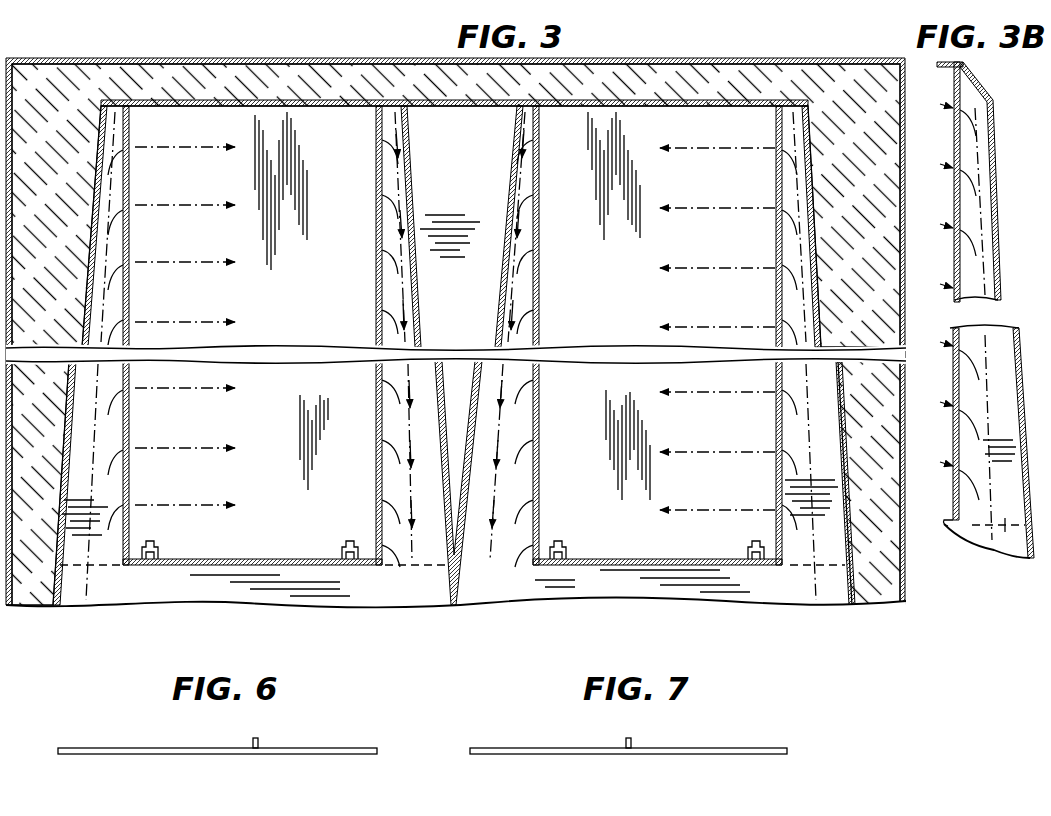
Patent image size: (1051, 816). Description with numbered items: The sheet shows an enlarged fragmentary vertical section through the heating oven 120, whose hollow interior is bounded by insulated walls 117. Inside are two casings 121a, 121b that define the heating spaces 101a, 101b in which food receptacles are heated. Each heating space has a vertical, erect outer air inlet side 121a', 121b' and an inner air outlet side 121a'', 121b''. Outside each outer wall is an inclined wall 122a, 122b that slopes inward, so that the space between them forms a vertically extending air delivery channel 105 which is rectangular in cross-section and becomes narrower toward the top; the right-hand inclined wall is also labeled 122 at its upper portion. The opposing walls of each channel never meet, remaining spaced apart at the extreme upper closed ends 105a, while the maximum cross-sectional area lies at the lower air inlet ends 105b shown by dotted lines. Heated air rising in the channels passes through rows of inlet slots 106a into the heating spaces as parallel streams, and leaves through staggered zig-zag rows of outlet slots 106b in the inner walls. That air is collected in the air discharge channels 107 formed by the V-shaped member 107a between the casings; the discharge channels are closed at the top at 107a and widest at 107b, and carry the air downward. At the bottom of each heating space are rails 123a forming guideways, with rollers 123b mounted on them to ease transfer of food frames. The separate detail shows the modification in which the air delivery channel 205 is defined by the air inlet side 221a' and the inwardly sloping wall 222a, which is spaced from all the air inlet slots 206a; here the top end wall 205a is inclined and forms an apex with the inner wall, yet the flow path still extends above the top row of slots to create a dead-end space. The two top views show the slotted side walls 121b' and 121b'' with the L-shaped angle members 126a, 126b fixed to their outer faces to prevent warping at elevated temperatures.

In FIG. 3, the oven 120 is at (68, 56).
In FIG. 3, the insulated walls 117 is at (186, 82).
In FIG. 3, the inclined wall 122b is at (107, 127).
In FIG. 3, the right outer sloped wall 122 is at (803, 186).
In FIG. 3, the inclined wall 122a is at (848, 602).
In FIG. 3, the outer air inlet side 121b' is at (162, 335).
In FIG. 6, the outer air inlet side 121b' is at (217, 740).
In FIG. 3, the outer air inlet side 121a' is at (749, 335).
In FIG. 3, the inner air outlet side 121b'' is at (340, 335).
In FIG. 7, the inner air outlet side 121b'' is at (628, 740).
In FIG. 3, the inner air outlet side 121a'' is at (575, 335).
In FIG. 3, the casing 121b is at (252, 522).
In FIG. 3, the casing 121a is at (657, 538).
In FIG. 3, the air discharge channels 107 is at (506, 302).
In FIG. 3, the V-shaped member 107a is at (514, 142).
In FIG. 3, the slots 106b is at (374, 146).
In FIG. 3, the slots 106a is at (130, 264).
In FIG. 3, the extreme upper closed ends 105a is at (782, 128).
In FIG. 3, the air delivery channels 105 is at (129, 421).
In FIG. 3, the lower air inlet ends 105b is at (801, 570).
In FIG. 3, the widest portions 107b is at (100, 568).
In FIG. 3, the heating space 101b is at (312, 310).
In FIG. 3, the heating space 101a is at (647, 310).
In FIG. 3, the rollers 123b is at (158, 548).
In FIG. 3, the rails 123a is at (170, 556).
In FIG. 3B, the top end walls 205a is at (969, 80).
In FIG. 3B, the air inlet side 221a' is at (944, 294).
In FIG. 3B, the inwardly sloping wall 222a is at (989, 150).
In FIG. 3B, the air delivery channels 205 is at (1000, 560).
In FIG. 3B, the air inlet slots 206a is at (942, 108).
In FIG. 6, the L-shaped angle member 126a is at (259, 740).
In FIG. 7, the L-shaped angle member 126b is at (632, 740).